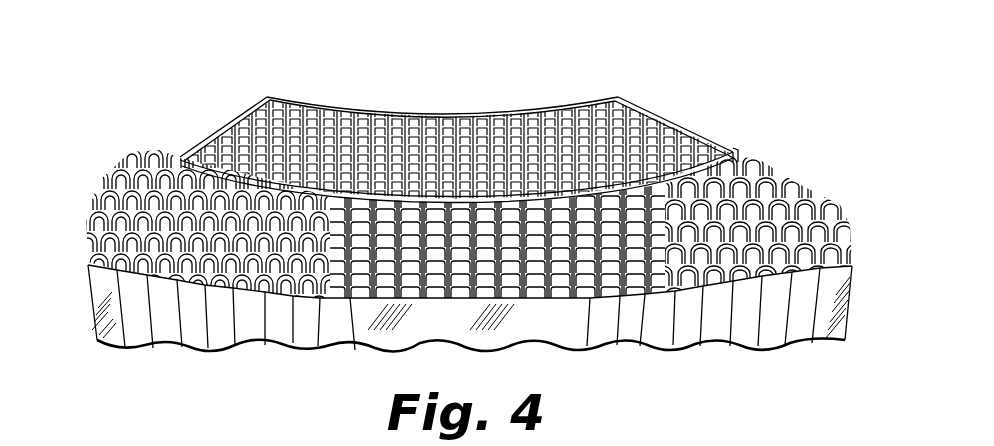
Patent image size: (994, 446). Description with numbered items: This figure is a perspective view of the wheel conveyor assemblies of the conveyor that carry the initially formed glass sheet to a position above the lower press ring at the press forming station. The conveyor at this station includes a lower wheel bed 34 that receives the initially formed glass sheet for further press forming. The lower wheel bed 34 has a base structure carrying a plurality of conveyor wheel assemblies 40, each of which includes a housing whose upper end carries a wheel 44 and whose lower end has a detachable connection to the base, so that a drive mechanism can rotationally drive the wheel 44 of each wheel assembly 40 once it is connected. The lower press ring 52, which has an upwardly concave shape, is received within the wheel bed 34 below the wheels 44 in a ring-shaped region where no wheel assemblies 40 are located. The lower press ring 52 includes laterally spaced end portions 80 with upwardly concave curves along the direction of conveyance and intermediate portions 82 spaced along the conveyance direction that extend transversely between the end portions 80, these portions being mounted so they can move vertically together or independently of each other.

The lower wheel bed 34 is at (575, 110).
The conveyor wheel assembly 40 is at (117, 200).
The wheel 44 is at (258, 122).
The lower press ring 52 is at (353, 110).
The end portion 80 is at (200, 140).
The intermediate portion 82 is at (458, 200).